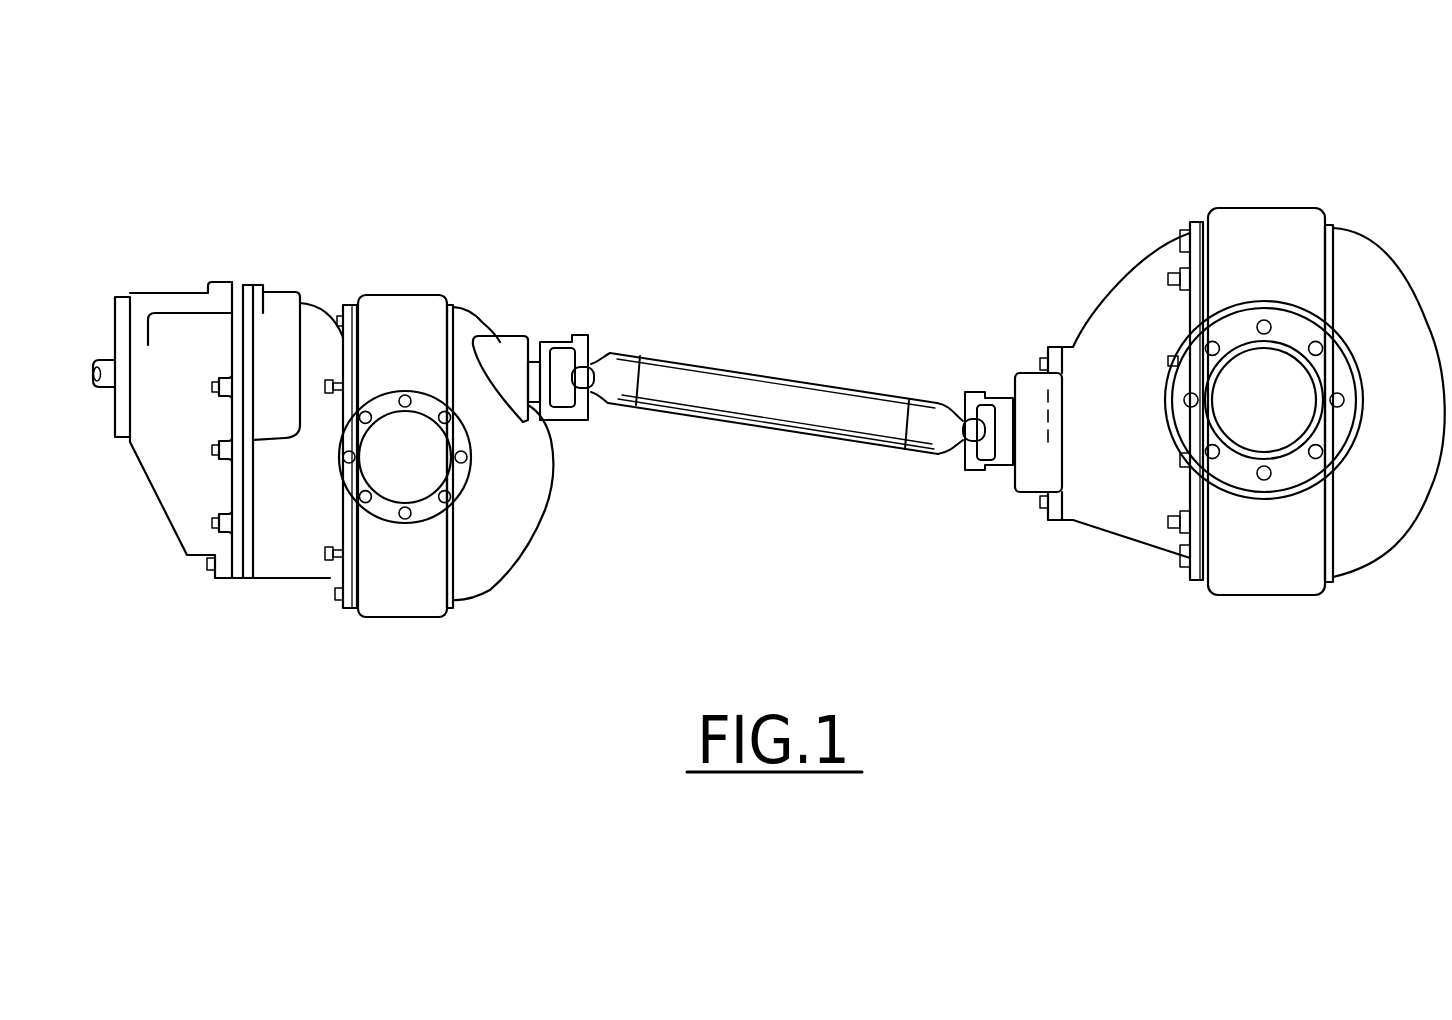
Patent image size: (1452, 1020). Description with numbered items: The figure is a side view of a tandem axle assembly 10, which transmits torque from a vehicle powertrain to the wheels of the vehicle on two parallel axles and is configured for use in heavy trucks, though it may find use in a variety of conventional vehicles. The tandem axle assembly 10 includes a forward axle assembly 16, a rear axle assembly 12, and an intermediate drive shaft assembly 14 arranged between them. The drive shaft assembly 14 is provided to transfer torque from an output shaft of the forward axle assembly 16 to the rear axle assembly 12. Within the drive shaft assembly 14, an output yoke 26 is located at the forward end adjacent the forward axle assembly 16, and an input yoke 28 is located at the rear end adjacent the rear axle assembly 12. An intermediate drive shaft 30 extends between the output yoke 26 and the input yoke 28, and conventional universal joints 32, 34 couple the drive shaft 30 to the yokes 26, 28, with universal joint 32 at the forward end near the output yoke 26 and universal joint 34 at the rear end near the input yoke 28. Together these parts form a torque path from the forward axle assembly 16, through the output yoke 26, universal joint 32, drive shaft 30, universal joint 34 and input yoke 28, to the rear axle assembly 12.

The tandem axle assembly 10 is at (899, 146).
The rear axle assembly 12 is at (1277, 207).
The intermediate drive shaft assembly 14 is at (782, 378).
The forward axle assembly 16 is at (372, 292).
The output yoke 26 is at (580, 422).
The input yoke 28 is at (997, 468).
The intermediate drive shaft 30 is at (815, 425).
The universal joint 32 is at (590, 353).
The universal joint 34 is at (962, 457).